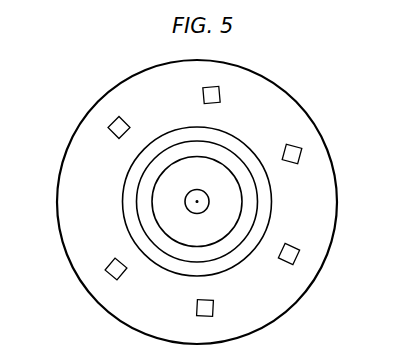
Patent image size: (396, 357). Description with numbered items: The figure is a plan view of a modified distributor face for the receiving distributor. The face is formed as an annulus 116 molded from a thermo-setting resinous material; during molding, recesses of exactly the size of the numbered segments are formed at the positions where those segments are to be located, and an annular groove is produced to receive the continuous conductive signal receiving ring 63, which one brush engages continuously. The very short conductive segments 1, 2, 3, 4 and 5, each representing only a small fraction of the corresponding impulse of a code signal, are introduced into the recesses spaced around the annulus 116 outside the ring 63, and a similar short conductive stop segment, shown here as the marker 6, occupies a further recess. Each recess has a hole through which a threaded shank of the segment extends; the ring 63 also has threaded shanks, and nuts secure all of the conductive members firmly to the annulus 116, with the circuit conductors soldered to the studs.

The annulus 116 is at (305, 144).
The continuous conductive signal receiving ring 63 is at (142, 160).
The conductive segment 1 is at (119, 128).
The conductive segment 2 is at (211, 94).
The conductive segment 3 is at (292, 154).
The conductive segment 4 is at (288, 253).
The conductive segment 5 is at (205, 308).
The measurement location 6 is at (116, 269).